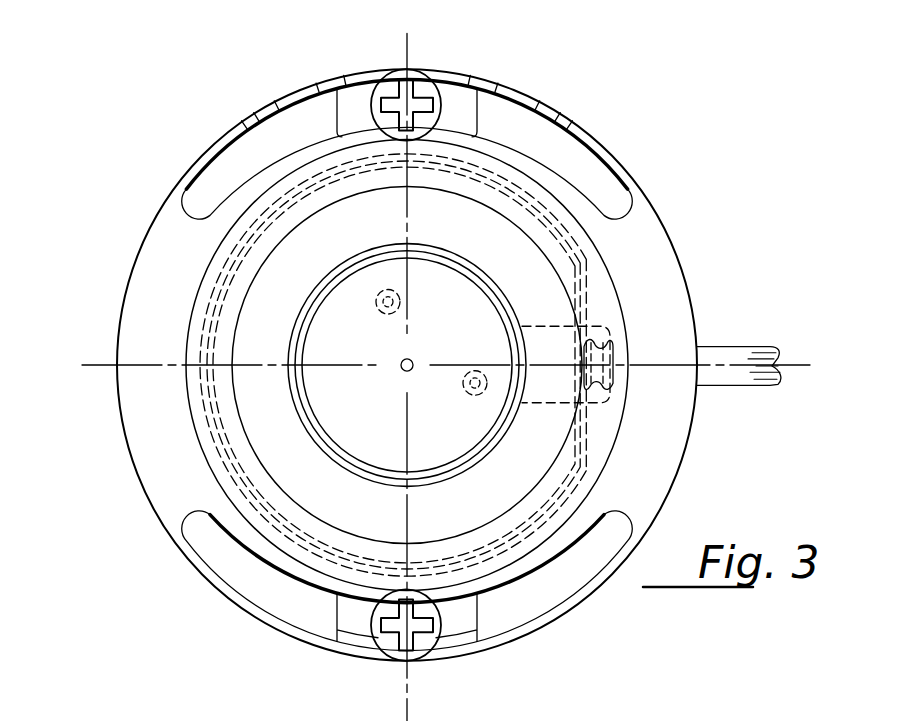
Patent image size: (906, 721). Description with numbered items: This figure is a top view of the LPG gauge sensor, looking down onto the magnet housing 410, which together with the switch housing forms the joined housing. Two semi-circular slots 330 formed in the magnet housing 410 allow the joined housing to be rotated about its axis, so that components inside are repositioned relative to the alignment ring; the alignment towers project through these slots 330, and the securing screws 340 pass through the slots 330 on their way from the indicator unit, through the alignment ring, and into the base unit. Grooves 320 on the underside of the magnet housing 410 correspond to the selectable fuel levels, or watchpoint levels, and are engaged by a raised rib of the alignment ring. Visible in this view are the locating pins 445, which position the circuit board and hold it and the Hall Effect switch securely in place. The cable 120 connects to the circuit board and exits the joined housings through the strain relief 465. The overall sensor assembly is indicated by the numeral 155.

The cable 120 is at (758, 347).
The dispenser assembly 155 is at (106, 477).
The grooves 320 is at (327, 88).
The slots 330 is at (590, 182).
The securing screws 340 is at (417, 85).
The magnet housing 410 is at (148, 258).
The locating pins 445 is at (463, 373).
The strain relief 465 is at (614, 350).